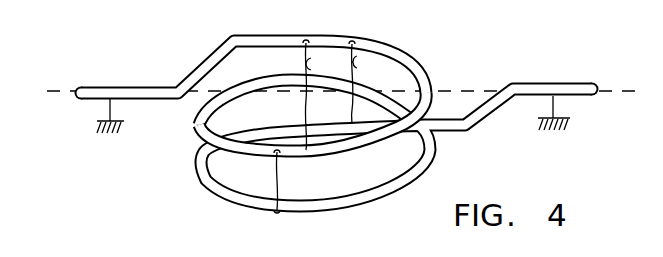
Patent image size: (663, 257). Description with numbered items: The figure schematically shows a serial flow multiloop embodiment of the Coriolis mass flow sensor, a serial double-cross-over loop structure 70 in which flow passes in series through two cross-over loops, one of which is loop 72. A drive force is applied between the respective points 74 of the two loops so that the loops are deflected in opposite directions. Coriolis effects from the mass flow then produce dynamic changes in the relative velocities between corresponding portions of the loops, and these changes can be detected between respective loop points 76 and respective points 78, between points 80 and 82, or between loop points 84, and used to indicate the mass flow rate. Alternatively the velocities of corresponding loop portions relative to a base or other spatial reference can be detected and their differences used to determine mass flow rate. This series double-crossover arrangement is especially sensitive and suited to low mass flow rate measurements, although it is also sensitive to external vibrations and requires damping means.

The torsion spring 70 is at (267, 87).
The loop 72 is at (287, 128).
The points 74 is at (277, 184).
The loop points 76 is at (183, 110).
The points 78 is at (443, 130).
The points 80 is at (398, 51).
The points 82 is at (392, 99).
The loop points 84 is at (321, 95).